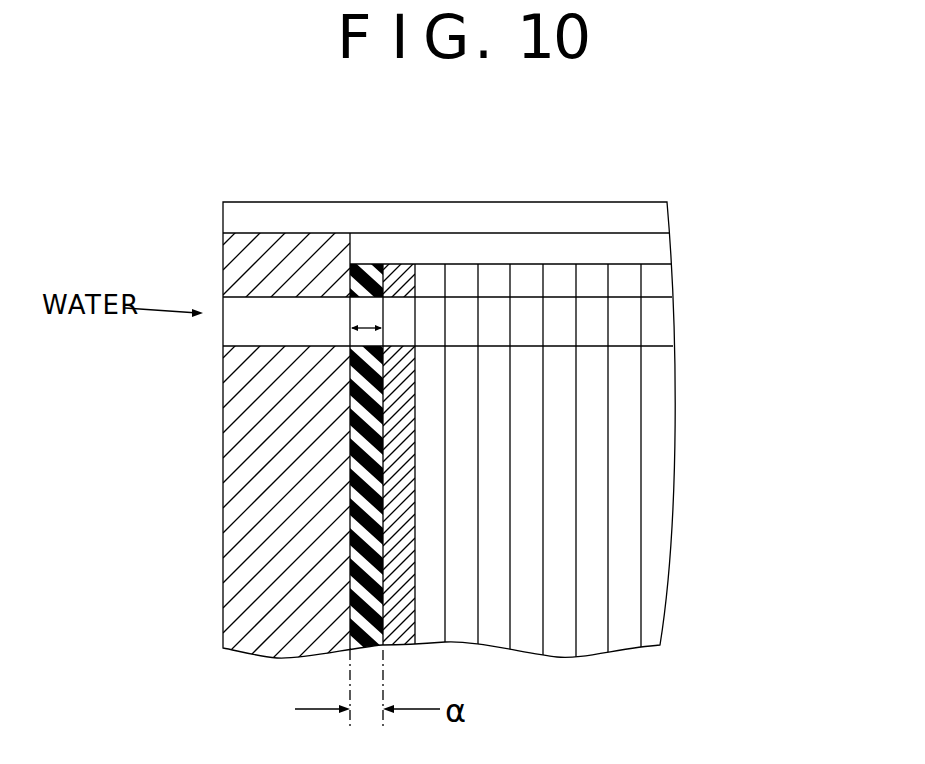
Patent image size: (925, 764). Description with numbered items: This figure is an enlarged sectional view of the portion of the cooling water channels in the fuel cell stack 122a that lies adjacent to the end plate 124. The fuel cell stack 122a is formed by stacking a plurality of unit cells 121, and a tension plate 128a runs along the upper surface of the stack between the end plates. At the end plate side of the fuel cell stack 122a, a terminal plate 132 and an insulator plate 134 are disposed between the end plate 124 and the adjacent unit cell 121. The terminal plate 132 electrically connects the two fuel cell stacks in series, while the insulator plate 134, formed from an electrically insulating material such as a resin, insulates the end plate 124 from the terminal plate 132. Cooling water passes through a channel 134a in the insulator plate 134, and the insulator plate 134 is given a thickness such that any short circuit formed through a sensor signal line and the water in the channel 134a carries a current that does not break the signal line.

The unit cell 121 is at (628, 273).
The fuel cell stack 122a is at (700, 278).
The end plate 124 is at (223, 475).
The tension plate 128a is at (517, 202).
The terminal plate 132 is at (398, 264).
The insulator plate 134 is at (373, 264).
The channel of the insulator 134a is at (362, 325).